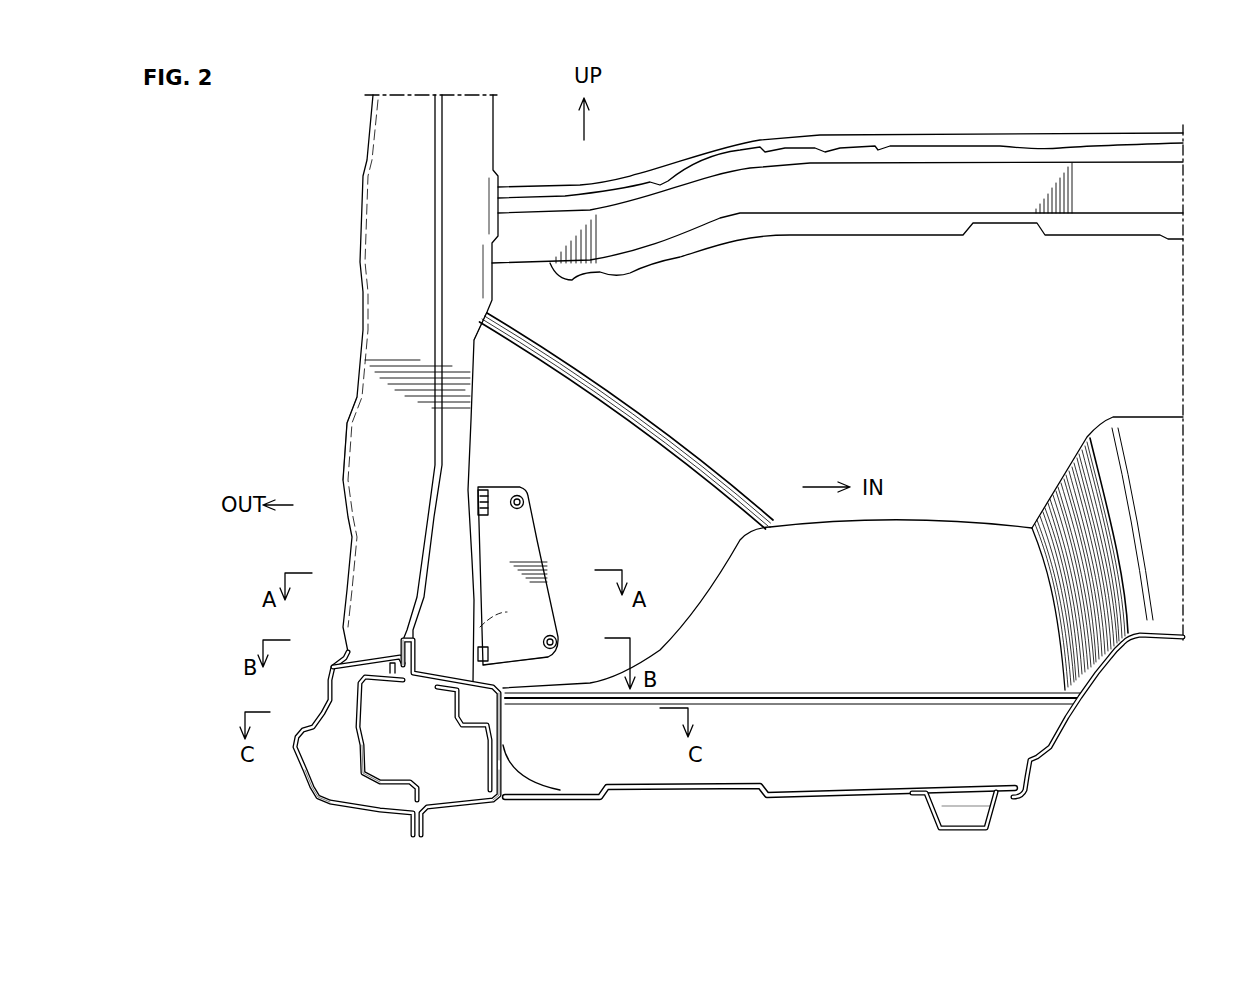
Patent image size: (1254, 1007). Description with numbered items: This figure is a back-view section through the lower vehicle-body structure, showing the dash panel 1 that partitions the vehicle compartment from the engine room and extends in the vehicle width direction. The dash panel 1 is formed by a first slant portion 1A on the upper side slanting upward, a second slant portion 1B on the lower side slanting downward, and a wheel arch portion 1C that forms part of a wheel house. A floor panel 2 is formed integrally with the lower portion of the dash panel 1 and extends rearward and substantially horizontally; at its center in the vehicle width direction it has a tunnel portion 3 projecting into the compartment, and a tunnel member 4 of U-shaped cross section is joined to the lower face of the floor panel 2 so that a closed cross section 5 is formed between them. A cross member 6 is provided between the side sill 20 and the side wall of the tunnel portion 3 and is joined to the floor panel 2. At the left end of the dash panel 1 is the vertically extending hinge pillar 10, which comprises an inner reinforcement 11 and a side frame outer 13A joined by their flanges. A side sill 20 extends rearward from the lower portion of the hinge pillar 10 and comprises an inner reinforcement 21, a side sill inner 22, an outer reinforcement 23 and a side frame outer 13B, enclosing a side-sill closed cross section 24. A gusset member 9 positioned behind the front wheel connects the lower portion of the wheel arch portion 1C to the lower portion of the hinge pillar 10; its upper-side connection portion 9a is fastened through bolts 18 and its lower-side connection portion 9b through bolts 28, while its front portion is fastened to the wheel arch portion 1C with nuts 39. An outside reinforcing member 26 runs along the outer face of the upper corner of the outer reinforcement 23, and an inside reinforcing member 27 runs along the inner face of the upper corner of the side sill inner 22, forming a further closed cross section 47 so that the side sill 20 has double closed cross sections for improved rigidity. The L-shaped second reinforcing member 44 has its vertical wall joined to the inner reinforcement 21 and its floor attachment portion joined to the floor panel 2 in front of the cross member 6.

The dash panel 1 is at (1146, 318).
The first slant portion 1A is at (970, 354).
The second slant portion 1B is at (874, 626).
The wheel arch portion 1C is at (623, 464).
The floor panel 2 is at (793, 799).
The tunnel portion 3 is at (1105, 664).
The tunnel member 4 is at (937, 818).
The closed cross section 5 is at (965, 808).
The cross member 6 is at (970, 692).
The gusset member 9 is at (551, 540).
The upper-side connection portion 9a is at (492, 495).
The lower-side connection portion 9b is at (533, 653).
The hinge pillar 10 is at (346, 336).
The inner reinforcement 11 is at (491, 282).
The side frame outer 13A is at (343, 428).
The side frame outer 13B is at (318, 805).
The bolt 18 is at (484, 502).
The side sill 20 is at (299, 787).
The inner reinforcement 21 is at (485, 805).
The side sill inner 22 is at (494, 776).
The outer reinforcement 23 is at (360, 753).
The side-sill closed cross section 24 is at (385, 765).
The outside reinforcing member 26 is at (375, 655).
The inside reinforcing member 27 is at (455, 716).
The bolt 28 is at (489, 652).
The nut 39 is at (519, 496).
The second reinforcing member 44 is at (528, 786).
The closed cross section 47 is at (501, 723).